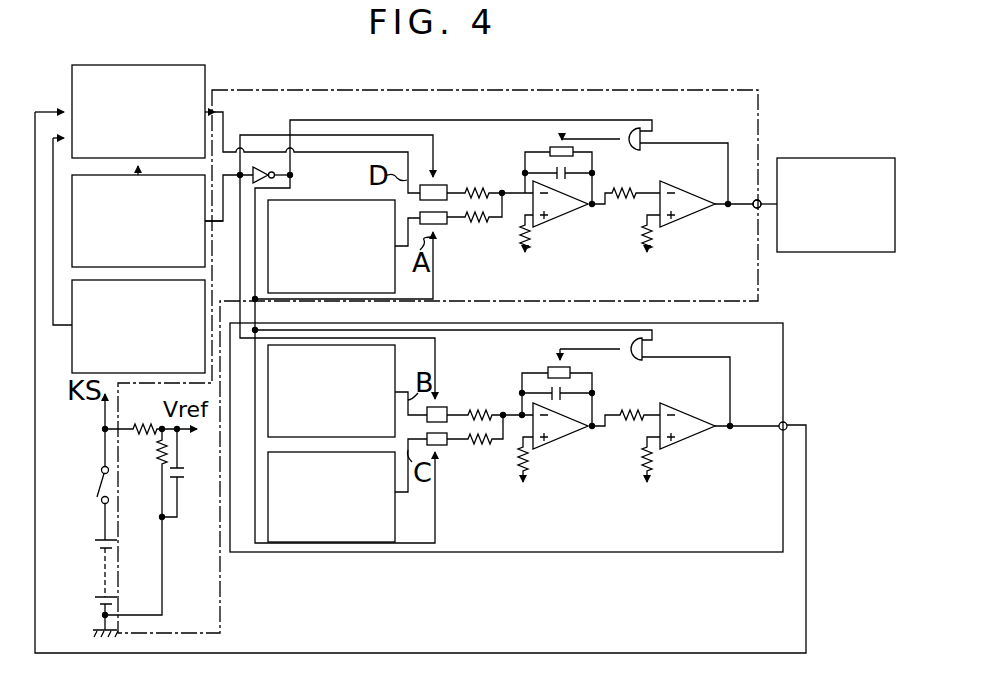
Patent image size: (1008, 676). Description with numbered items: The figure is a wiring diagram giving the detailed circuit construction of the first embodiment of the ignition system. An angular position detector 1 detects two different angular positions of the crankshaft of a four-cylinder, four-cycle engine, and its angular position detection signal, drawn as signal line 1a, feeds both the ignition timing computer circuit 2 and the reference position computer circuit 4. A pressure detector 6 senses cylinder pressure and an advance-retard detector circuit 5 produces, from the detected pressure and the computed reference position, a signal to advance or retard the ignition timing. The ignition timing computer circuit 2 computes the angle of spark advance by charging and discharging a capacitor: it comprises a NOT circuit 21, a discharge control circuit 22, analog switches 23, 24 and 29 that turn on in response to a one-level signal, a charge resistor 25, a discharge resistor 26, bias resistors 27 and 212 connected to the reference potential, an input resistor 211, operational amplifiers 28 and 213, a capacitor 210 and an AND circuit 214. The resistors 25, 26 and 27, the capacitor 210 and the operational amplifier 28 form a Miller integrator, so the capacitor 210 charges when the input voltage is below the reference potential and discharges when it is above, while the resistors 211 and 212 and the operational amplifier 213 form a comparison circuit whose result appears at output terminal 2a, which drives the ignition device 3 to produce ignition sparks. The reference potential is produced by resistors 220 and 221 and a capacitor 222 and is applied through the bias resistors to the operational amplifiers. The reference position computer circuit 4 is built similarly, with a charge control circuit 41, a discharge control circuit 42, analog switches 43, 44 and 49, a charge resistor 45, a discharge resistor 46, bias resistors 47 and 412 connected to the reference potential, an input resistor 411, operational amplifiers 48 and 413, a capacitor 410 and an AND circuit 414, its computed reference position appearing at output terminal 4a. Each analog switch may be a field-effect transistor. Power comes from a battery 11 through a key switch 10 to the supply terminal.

The angular position detector 1 is at (72, 250).
The angular position signal line 1a is at (232, 204).
The ignition timing computer circuit 2 is at (665, 91).
The output terminal of first circuit 2a is at (754, 208).
The ignition device 3 is at (837, 158).
The reference position computer circuit 4 is at (785, 355).
The output terminal of second circuit 4a is at (786, 425).
The advance-retard detector circuit 5 is at (140, 65).
The pressure detector 6 is at (72, 348).
The key switch 10 is at (98, 489).
The battery 11 is at (104, 572).
The NOT circuit 21 is at (253, 165).
The discharge control circuit 22 is at (340, 200).
The analog switch 23 is at (440, 184).
The analog switch 24 is at (443, 230).
The charge resistor 25 is at (467, 193).
The discharge resistor 26 is at (467, 223).
The bias resistor 27 is at (530, 238).
The operational amplifier 28 is at (558, 216).
The analog switch 29 is at (560, 143).
The capacitor 210 is at (575, 165).
The input resistor 211 is at (638, 190).
The bias resistor 212 is at (645, 240).
The operational amplifier 213 is at (666, 230).
The AND circuit 214 is at (640, 134).
The resistor 220 is at (142, 422).
The resistor 221 is at (162, 456).
The capacitor 222 is at (184, 474).
The charge control circuit 41 is at (394, 371).
The discharge control circuit 42 is at (364, 542).
The analog switch 43 is at (435, 400).
The analog switch 44 is at (447, 446).
The charge resistor 45 is at (470, 411).
The discharge resistor 46 is at (484, 454).
The bias resistor 47 is at (527, 460).
The operational amplifier 48 is at (560, 438).
The analog switch 49 is at (558, 366).
The capacitor 410 is at (566, 381).
The input resistor 411 is at (638, 408).
The bias resistor 412 is at (650, 464).
The operational amplifier 413 is at (686, 438).
The AND circuit 414 is at (642, 353).